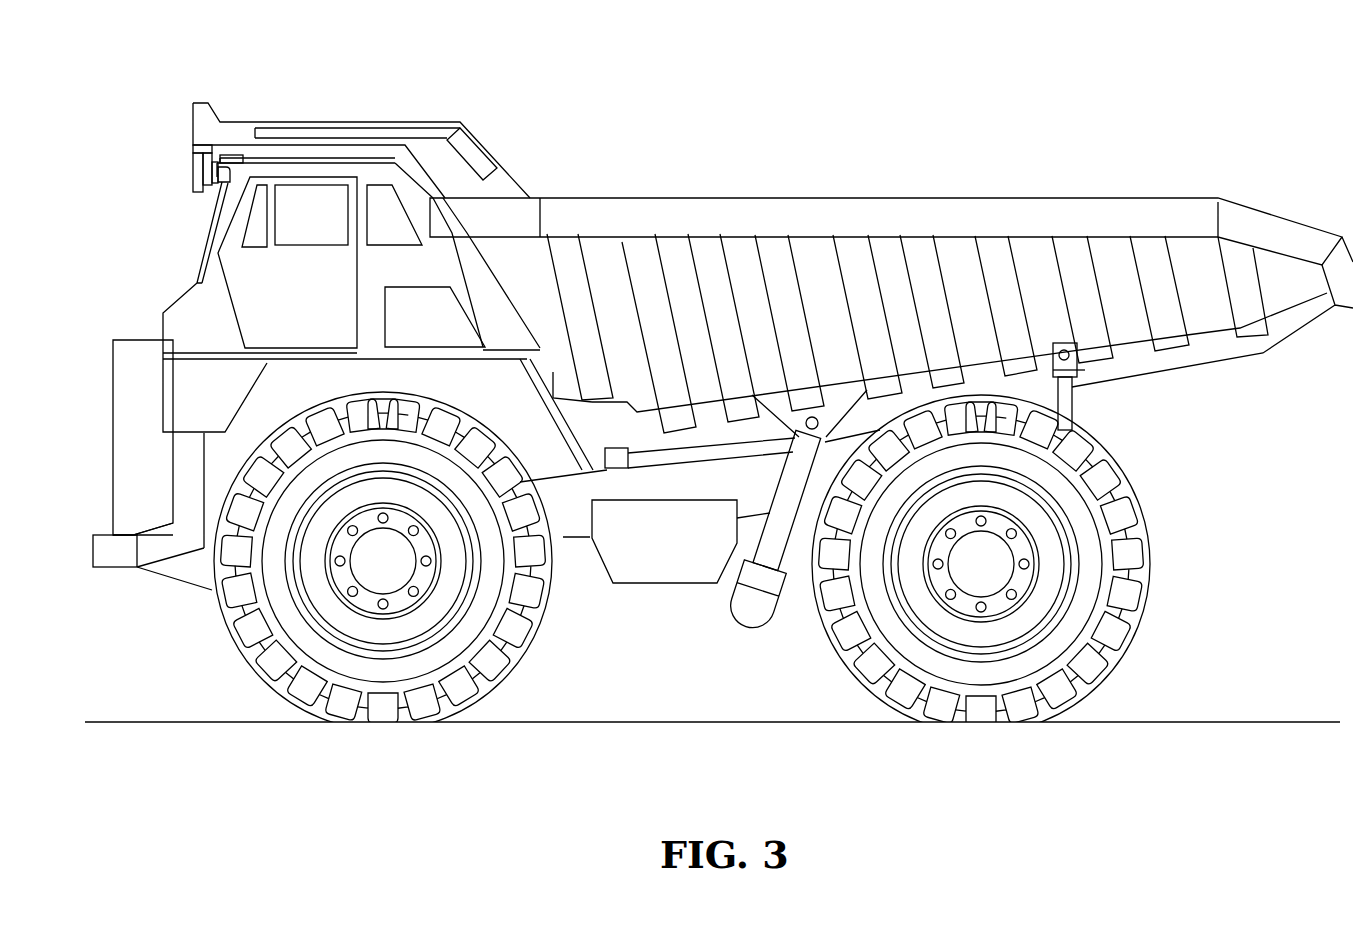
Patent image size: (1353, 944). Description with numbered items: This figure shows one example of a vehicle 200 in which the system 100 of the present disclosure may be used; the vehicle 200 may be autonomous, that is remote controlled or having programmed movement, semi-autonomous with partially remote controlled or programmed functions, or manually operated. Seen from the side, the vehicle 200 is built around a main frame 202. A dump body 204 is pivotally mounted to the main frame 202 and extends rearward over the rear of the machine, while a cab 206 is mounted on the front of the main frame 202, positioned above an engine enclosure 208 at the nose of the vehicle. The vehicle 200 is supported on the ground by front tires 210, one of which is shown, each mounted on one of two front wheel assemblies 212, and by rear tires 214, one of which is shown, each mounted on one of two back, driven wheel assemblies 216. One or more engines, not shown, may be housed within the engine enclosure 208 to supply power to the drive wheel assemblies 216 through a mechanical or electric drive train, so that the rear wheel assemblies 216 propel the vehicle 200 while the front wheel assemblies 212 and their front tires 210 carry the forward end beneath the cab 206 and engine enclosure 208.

The vehicle 200 is at (1017, 87).
The monitoring system 100 is at (420, 302).
The main frame 202 is at (563, 508).
The dump body 204 is at (807, 217).
The cab 206 is at (250, 267).
The engine enclosure 208 is at (250, 417).
The front tires 210 is at (307, 687).
The front wheel assemblies 212 is at (400, 625).
The rear tires 214 is at (1017, 707).
The back (driven) wheel assemblies 216 is at (1027, 612).